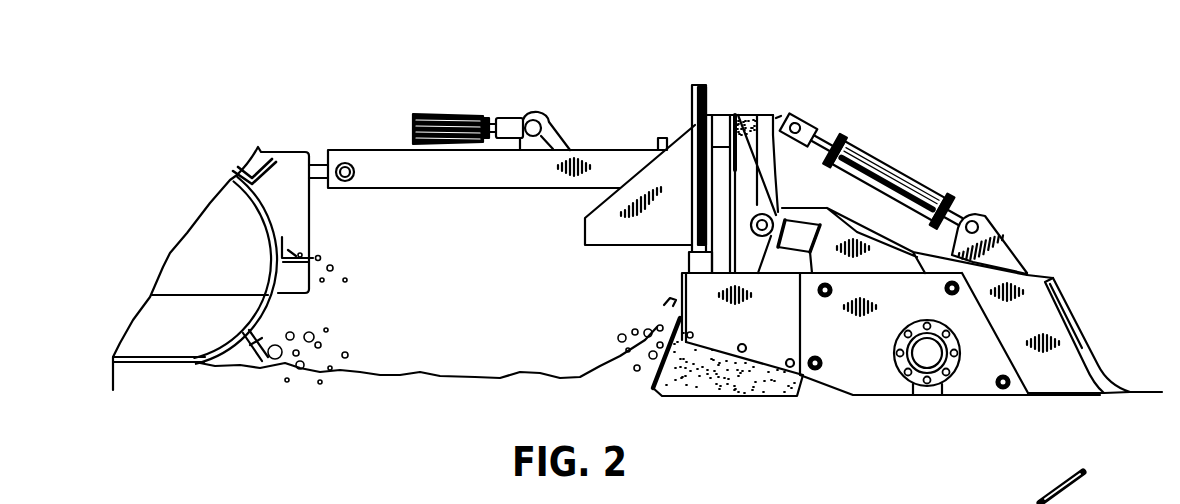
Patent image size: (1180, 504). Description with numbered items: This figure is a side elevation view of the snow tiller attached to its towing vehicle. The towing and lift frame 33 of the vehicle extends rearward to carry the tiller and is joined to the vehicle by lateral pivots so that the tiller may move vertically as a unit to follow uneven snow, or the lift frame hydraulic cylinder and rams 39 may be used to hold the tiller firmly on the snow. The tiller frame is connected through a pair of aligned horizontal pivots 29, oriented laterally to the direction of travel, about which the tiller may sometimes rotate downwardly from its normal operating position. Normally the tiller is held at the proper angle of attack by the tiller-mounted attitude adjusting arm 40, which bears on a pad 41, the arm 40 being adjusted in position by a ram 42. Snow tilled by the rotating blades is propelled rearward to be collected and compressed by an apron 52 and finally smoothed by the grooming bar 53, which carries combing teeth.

The horizontal pivots 29 is at (775, 208).
The towing and lift frame 33 is at (488, 186).
The lift frame hydraulic cylinder and rams 39 is at (443, 114).
The attitude adjusting arm 40 is at (773, 120).
The pad 41 is at (747, 110).
The ram 42 is at (836, 146).
The apron 52 is at (1033, 286).
The grooming bar 53 is at (1105, 358).